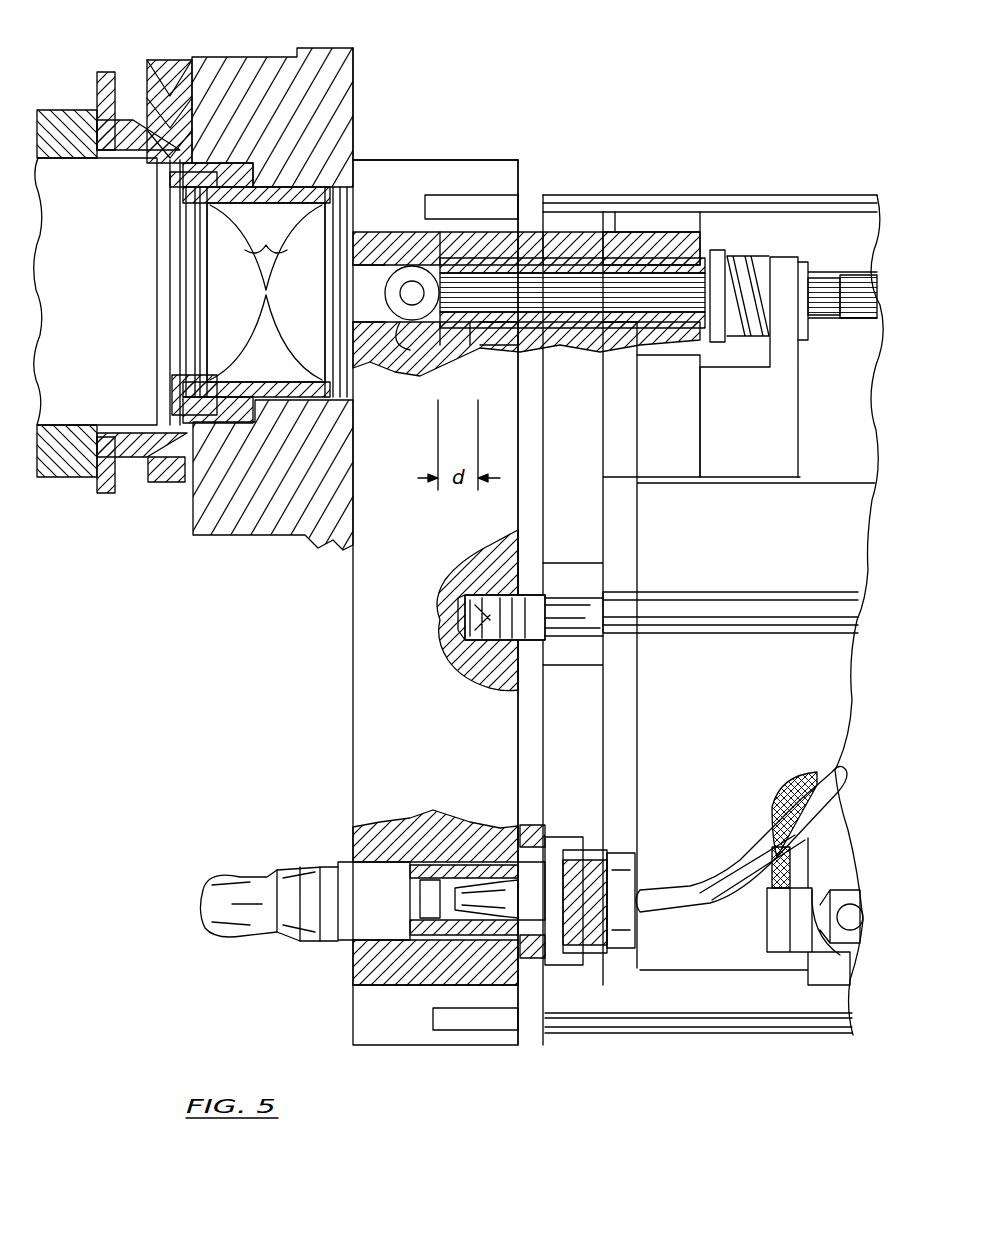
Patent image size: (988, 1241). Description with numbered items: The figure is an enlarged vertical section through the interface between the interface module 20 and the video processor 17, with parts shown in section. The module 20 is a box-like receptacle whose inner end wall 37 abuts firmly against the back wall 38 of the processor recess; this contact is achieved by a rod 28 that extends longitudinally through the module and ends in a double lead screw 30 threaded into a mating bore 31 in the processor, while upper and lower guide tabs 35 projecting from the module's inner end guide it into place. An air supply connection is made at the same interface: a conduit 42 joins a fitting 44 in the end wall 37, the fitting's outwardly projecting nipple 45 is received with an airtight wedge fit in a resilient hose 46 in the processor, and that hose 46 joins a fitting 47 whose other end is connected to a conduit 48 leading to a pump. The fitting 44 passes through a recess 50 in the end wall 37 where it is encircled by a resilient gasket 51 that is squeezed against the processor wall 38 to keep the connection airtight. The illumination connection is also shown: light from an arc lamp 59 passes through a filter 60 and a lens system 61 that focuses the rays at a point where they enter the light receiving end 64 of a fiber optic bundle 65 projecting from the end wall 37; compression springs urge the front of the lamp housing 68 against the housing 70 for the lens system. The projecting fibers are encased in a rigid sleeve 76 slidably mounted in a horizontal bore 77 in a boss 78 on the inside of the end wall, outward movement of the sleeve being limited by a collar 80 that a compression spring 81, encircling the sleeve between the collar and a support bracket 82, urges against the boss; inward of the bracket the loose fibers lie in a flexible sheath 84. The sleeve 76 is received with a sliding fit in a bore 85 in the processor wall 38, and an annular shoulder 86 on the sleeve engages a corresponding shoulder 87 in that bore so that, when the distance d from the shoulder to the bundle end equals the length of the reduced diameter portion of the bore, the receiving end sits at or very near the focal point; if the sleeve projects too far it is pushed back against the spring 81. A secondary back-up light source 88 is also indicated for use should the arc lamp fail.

The video processor 17 is at (335, 545).
The interface module 20 is at (750, 1005).
The rod 28 is at (808, 600).
The double lead screw 30 is at (500, 645).
The mating bore 31 is at (455, 615).
The guide tabs 35 is at (478, 198).
The inner end wall 37 is at (520, 415).
The back wall 38 is at (518, 512).
The conduit 42 is at (700, 892).
The fitting 44 is at (612, 950).
The nipple 45 is at (482, 848).
The resilient hose 46 is at (440, 833).
The fitting 47 is at (350, 932).
The conduit 48 is at (250, 890).
The recess 50 is at (548, 960).
The resilient gasket 51 is at (536, 835).
The arc lamp 59 is at (104, 256).
The filter 60 is at (178, 305).
The lens system 61 is at (266, 292).
The light receiving end 64 is at (405, 340).
The fiber optic bundle 65 is at (560, 287).
The lamp housing 68 is at (70, 460).
The housing 70 is at (262, 62).
The rigid sleeve 76 is at (598, 322).
The horizontal bore 77 is at (620, 267).
The boss 78 is at (692, 230).
The collar 80 is at (718, 262).
The compression spring 81 is at (748, 333).
The support bracket 82 is at (790, 422).
The flexible sheath 84 is at (855, 295).
The bore 85 is at (430, 268).
The annular shoulder 86 is at (482, 326).
The shoulder 87 is at (450, 335).
The back-up light source 88 is at (393, 268).